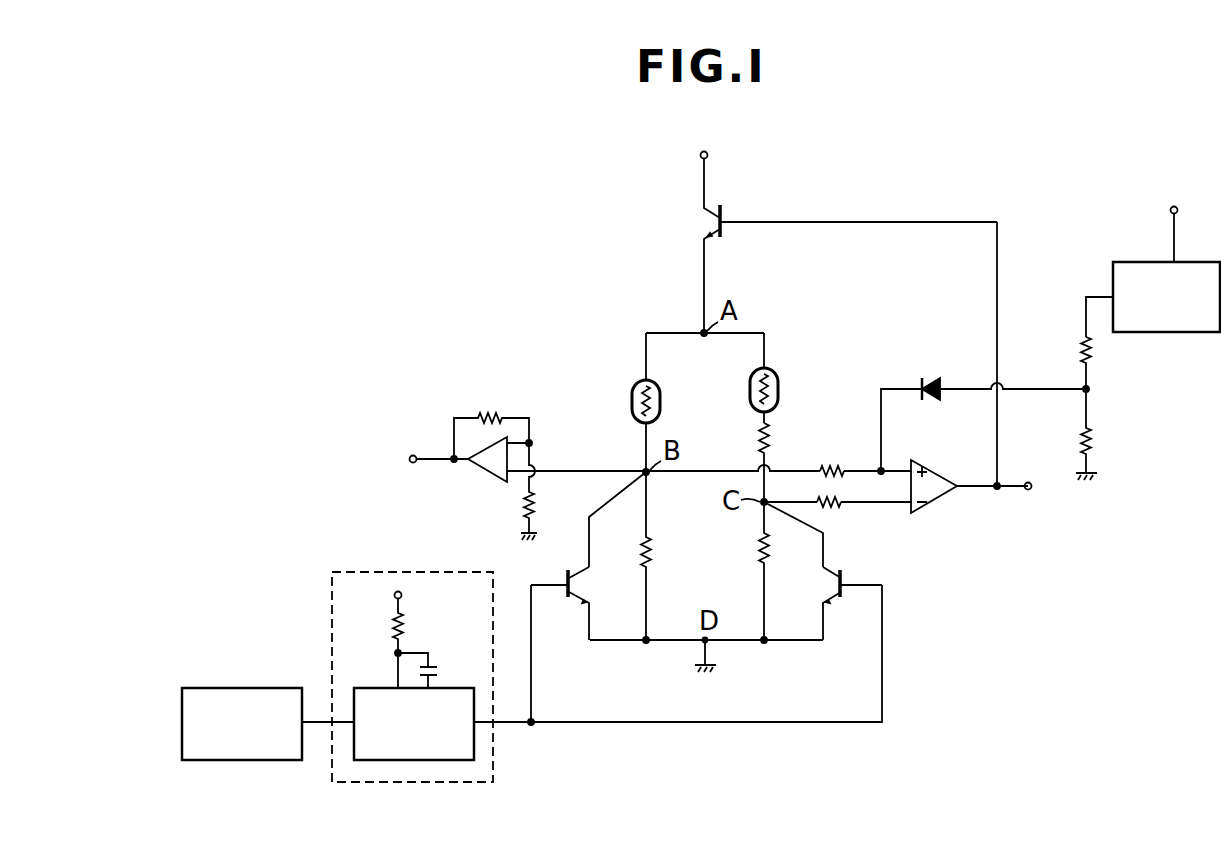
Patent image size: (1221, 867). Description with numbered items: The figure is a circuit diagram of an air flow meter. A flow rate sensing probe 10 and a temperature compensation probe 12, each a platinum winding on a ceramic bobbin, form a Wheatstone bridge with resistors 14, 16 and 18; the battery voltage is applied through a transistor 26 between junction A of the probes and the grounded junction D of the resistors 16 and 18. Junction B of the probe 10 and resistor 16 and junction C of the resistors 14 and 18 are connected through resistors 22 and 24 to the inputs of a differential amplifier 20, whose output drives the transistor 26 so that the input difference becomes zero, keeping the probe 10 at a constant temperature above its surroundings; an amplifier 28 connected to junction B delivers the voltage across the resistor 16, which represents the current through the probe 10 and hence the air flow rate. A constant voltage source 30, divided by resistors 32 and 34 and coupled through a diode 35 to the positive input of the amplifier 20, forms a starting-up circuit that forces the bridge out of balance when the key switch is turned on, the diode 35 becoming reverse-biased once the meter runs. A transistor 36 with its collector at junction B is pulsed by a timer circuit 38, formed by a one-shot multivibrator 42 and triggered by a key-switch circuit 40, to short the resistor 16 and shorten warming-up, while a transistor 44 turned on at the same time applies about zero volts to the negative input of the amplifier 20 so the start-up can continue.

The flow rate sensing probe 10 is at (632, 404).
The temperature compensation probe 12 is at (779, 386).
The resistor 14 is at (770, 437).
The resistor 16 is at (652, 552).
The resistor 18 is at (758, 553).
The differential amplifier 20 is at (936, 508).
The resistor 22 is at (840, 454).
The resistor 24 is at (841, 508).
The transistor 26 is at (727, 232).
The amplifier 28 is at (492, 479).
The constant voltage source 30 is at (1129, 262).
The resistor 32 is at (1093, 350).
The resistor 34 is at (1095, 441).
The diode 35 is at (926, 377).
The transistor 36 is at (572, 599).
The timer circuit 38 is at (332, 620).
The key-switch circuit 40 is at (250, 688).
The one-shot multivibrator 42 is at (476, 746).
The transistor 44 is at (840, 599).